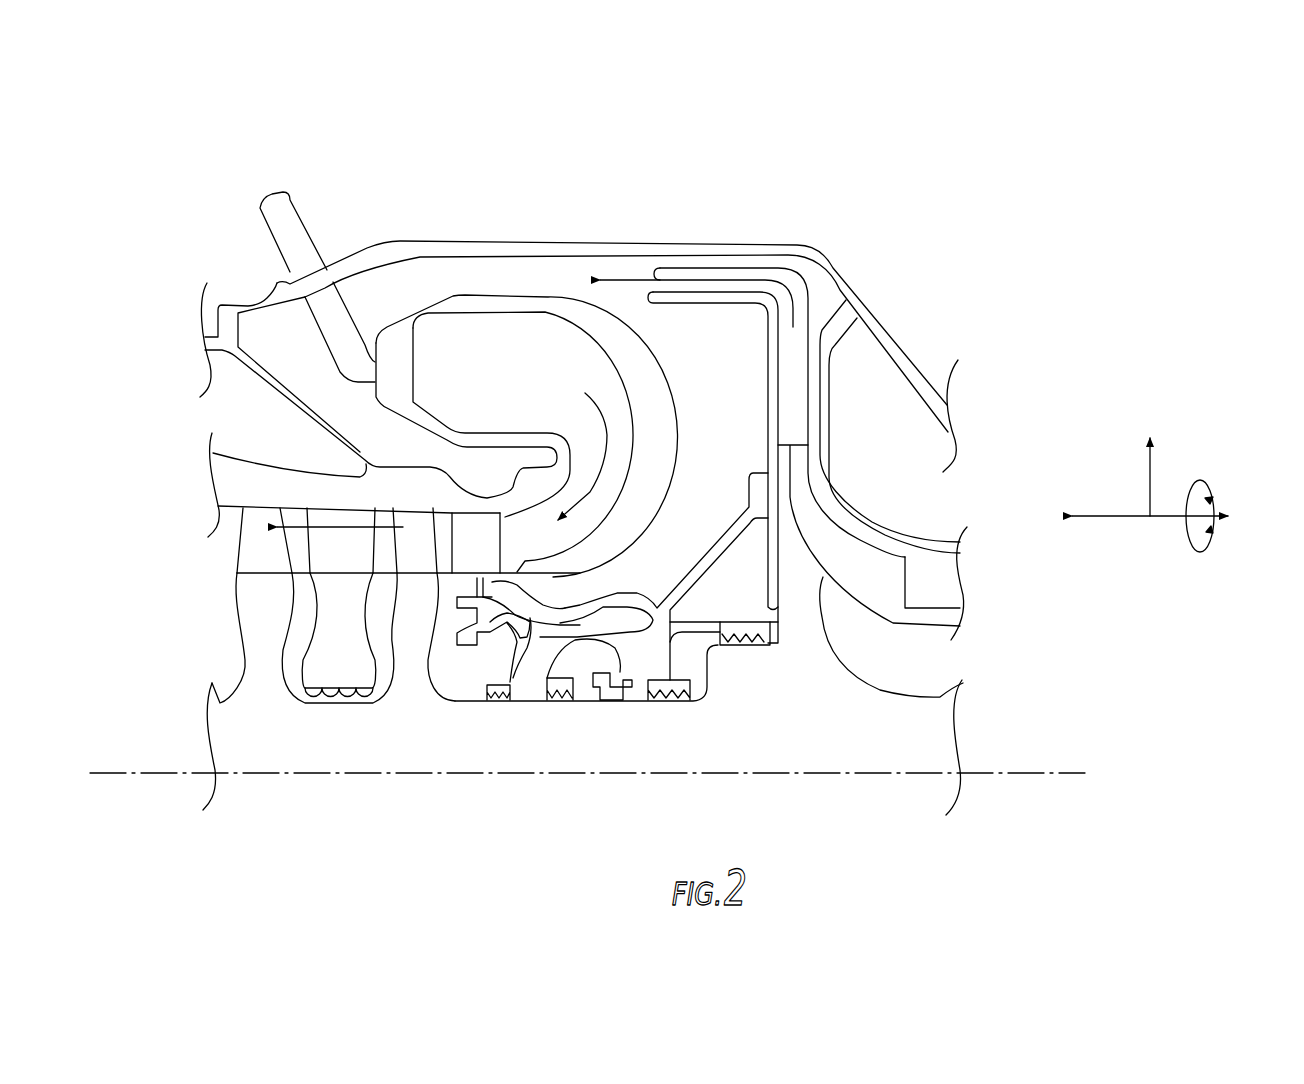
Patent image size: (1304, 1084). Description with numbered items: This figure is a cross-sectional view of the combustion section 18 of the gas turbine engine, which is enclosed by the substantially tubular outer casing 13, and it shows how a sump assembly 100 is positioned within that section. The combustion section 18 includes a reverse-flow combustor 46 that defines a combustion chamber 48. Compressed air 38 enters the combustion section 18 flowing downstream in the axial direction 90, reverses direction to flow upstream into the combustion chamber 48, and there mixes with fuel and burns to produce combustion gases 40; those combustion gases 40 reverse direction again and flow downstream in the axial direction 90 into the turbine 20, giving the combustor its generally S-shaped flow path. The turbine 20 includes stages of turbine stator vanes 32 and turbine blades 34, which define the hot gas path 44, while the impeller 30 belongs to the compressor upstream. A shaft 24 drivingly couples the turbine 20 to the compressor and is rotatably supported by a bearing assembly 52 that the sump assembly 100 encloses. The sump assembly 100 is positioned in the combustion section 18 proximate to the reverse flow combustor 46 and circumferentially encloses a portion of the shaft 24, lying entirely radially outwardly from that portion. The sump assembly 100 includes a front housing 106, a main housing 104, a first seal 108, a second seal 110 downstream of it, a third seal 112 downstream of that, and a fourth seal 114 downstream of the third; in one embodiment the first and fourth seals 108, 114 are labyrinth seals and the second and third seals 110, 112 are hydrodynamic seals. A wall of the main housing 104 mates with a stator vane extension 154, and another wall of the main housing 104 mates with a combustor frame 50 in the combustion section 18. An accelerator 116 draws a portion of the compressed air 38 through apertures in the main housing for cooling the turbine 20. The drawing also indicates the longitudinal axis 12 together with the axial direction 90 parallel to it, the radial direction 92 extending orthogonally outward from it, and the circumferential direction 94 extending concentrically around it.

The longitudinal axis 12 is at (1052, 772).
The outer casing 13 is at (395, 241).
The combustion section 18 is at (620, 172).
The turbine 20 is at (140, 417).
The shaft 24 is at (940, 697).
The impeller 30 is at (887, 583).
The turbine stator vanes 32 is at (355, 563).
The turbine blades 34 is at (277, 563).
The compressed air 38 is at (633, 280).
The combustion gases 40 is at (605, 464).
The hot gas path 44 is at (332, 520).
The reverse-flow combustor 46 is at (492, 302).
The combustion chamber 48 is at (503, 378).
The combustor frame 50 is at (770, 405).
The bearing assembly 52 is at (613, 693).
The axial direction 90 is at (1120, 517).
The radial direction 92 is at (1153, 468).
The circumferential direction 94 is at (1200, 483).
The sump assembly 100 is at (683, 530).
The main housing 104 is at (607, 610).
The front housing 106 is at (693, 627).
The first seal 108 is at (770, 645).
The second seal 110 is at (667, 700).
The third seal 112 is at (557, 700).
The fourth seal 114 is at (493, 700).
The accelerator 116 is at (463, 642).
The stator vane extension 154 is at (513, 617).